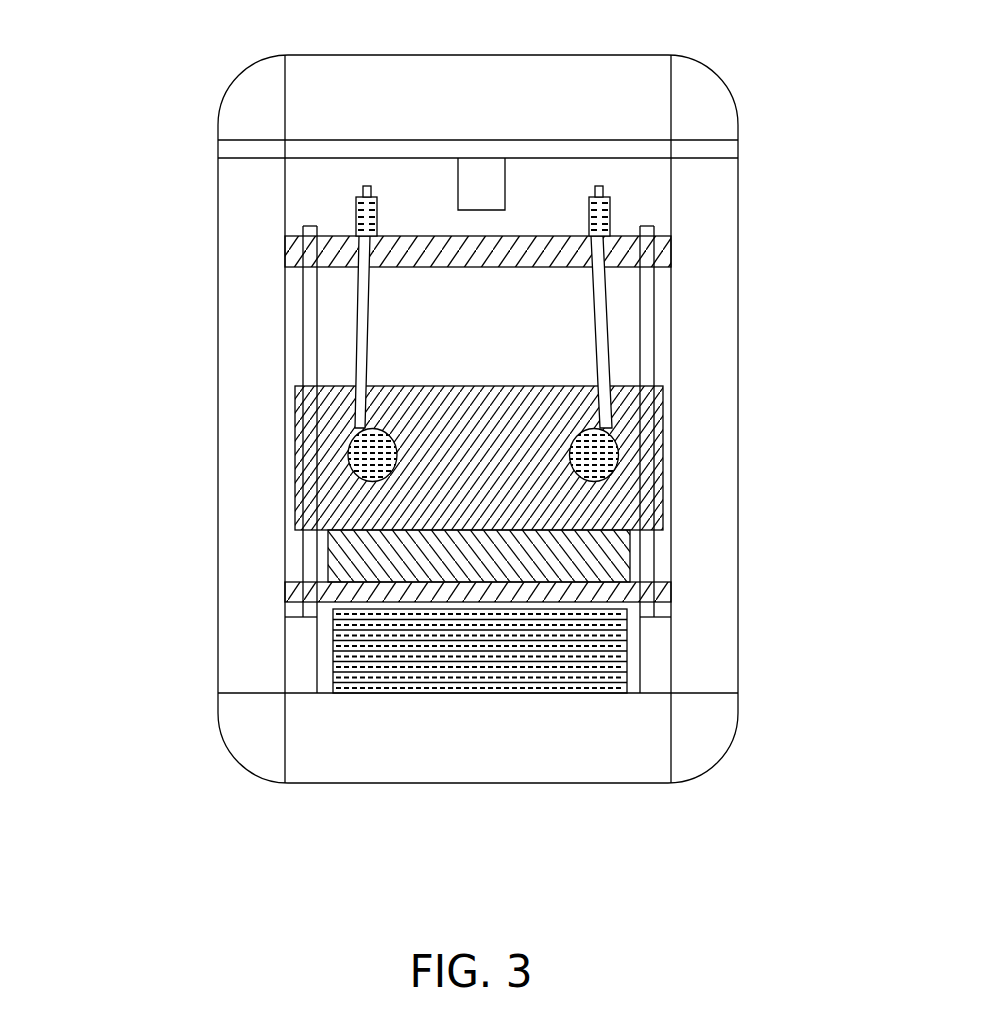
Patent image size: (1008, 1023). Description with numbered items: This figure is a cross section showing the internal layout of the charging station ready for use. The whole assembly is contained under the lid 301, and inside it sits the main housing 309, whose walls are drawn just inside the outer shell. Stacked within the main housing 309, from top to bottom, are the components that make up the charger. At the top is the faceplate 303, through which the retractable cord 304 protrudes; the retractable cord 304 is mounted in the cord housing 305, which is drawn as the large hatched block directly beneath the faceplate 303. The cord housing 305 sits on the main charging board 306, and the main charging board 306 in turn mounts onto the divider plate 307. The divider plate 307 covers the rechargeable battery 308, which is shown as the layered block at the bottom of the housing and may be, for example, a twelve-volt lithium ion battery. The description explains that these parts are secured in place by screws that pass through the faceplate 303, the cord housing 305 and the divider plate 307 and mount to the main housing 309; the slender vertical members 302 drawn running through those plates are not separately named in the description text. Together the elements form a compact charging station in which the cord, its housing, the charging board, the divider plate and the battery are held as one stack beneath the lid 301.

The lid 301 is at (257, 112).
The guide rod 302 is at (310, 283).
The faceplate 303 is at (620, 252).
The retractable cord 304 is at (600, 452).
The cord housing 305 is at (623, 502).
The main charging board 306 is at (598, 555).
The divider plate 307 is at (617, 590).
The rechargeable battery 308 is at (333, 645).
The main housing 309 is at (255, 327).